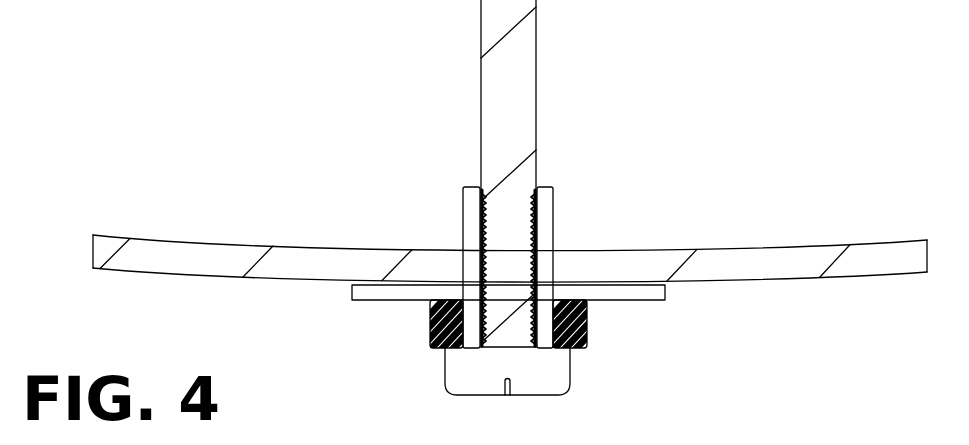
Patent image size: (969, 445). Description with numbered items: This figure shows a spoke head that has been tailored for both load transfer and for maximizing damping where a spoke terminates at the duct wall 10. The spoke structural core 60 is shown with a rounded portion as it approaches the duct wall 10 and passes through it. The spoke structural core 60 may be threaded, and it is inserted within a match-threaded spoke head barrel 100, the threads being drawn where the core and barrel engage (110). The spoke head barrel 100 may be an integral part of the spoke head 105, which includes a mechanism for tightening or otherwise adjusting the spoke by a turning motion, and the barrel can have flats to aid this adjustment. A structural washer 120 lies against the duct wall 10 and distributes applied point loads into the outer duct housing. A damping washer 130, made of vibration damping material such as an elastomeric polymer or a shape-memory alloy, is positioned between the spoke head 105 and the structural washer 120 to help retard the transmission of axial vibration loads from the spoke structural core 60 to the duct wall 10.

The duct wall 10 is at (477, 200).
The spoke structural core 60 is at (413, 173).
The spoke head barrel 100 is at (602, 214).
The spoke head 105 is at (405, 357).
The threads 110 is at (616, 247).
The structural washer 120 is at (665, 296).
The damping washer 130 is at (571, 325).